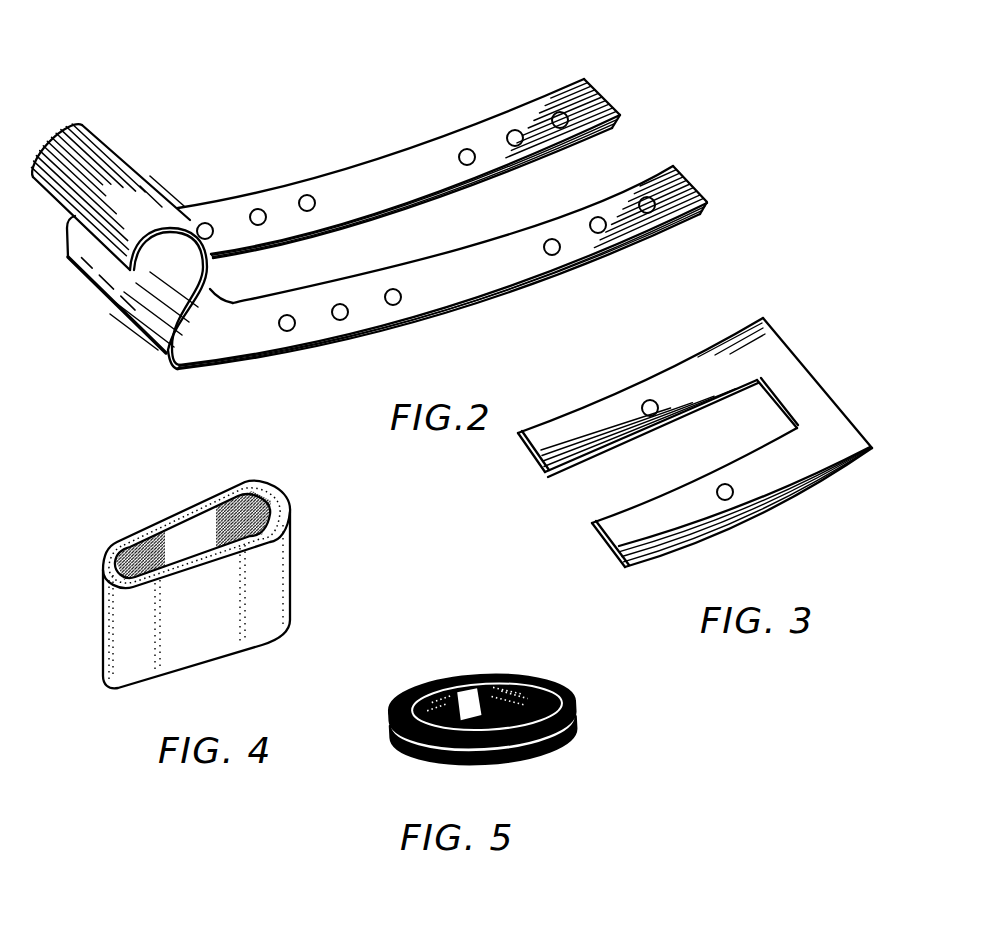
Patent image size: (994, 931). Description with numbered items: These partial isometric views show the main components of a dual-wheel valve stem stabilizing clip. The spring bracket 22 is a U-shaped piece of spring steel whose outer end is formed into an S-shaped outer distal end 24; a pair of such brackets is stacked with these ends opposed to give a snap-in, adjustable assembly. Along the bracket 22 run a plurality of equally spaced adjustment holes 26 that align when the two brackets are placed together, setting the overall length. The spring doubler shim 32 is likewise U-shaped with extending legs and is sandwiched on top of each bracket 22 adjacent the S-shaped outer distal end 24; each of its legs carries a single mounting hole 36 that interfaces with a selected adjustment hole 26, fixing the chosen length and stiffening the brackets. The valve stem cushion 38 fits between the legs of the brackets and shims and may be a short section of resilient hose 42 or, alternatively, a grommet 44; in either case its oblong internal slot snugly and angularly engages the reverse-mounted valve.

In FIG. 2, the spring bracket 22 is at (345, 168).
In FIG. 2, the S-shaped outer distal end 24 is at (116, 150).
In FIG. 2, the adjustment holes 26 is at (584, 79).
In FIG. 3, the spring doubler shim 32 is at (786, 338).
In FIG. 3, the mounting hole 36 is at (648, 401).
In FIG. 4, the valve stem cushion 38 is at (298, 582).
In FIG. 5, the valve stem cushion 38 is at (499, 676).
In FIG. 4, the hose 42 is at (130, 534).
In FIG. 5, the grommet 44 is at (562, 733).